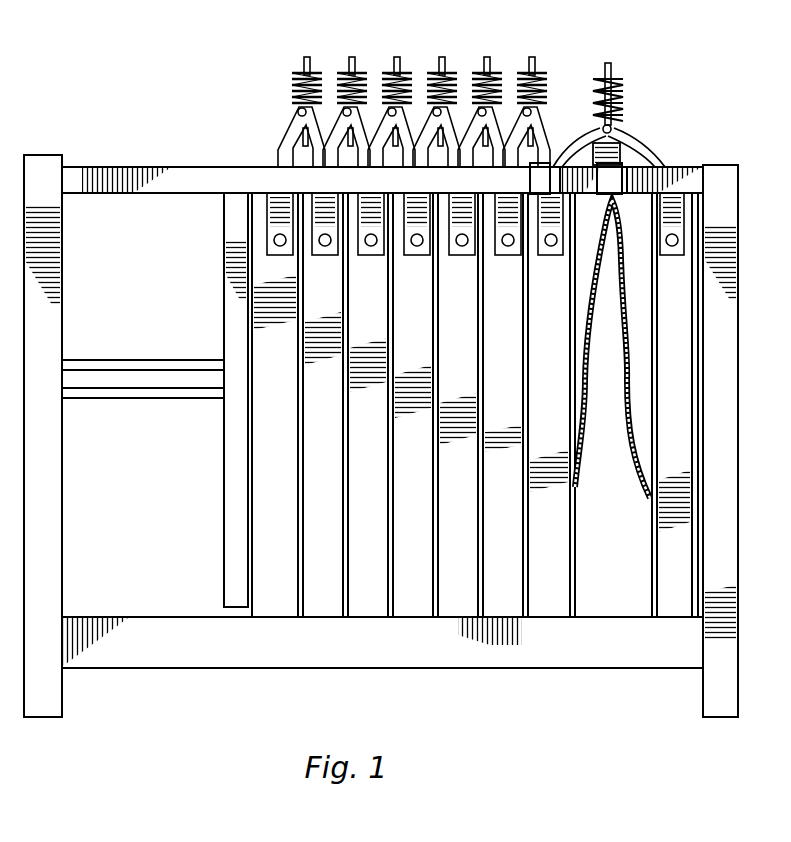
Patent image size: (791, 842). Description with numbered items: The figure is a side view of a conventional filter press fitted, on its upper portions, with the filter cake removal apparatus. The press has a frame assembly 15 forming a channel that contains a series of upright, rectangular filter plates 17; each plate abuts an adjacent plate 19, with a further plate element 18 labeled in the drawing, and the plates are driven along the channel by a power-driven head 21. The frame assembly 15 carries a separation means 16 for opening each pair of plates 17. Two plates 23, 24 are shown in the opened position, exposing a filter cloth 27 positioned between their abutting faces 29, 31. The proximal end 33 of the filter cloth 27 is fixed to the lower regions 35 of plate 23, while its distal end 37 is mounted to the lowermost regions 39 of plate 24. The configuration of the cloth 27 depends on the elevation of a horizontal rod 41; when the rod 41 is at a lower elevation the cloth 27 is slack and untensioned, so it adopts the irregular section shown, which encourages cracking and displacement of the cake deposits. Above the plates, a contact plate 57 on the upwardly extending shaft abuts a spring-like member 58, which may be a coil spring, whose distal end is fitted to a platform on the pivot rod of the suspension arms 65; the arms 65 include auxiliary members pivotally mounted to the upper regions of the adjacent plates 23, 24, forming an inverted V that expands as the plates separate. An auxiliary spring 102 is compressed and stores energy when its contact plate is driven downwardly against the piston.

The frame assembly 15 is at (738, 360).
The separation means 16 is at (530, 184).
The filter plates 17 is at (278, 408).
The slat edge 18 is at (480, 520).
The adjacent plate 19 is at (515, 578).
The power-driven head 21 is at (222, 465).
The plate 23 is at (557, 552).
The plate 24 is at (668, 600).
The filter cloth 27 is at (628, 379).
The abutting face 29 is at (580, 290).
The abutting face 31 is at (640, 335).
The proximal end 33 is at (578, 478).
The lower regions 35 is at (575, 505).
The distal end 37 is at (648, 498).
The lowermost regions 39 is at (640, 549).
The horizontal rod 41 is at (614, 219).
The contact plate 57 is at (612, 72).
The spring-like member 58 is at (620, 103).
The suspension arms 65 is at (648, 150).
The auxiliary spring 102 is at (596, 136).